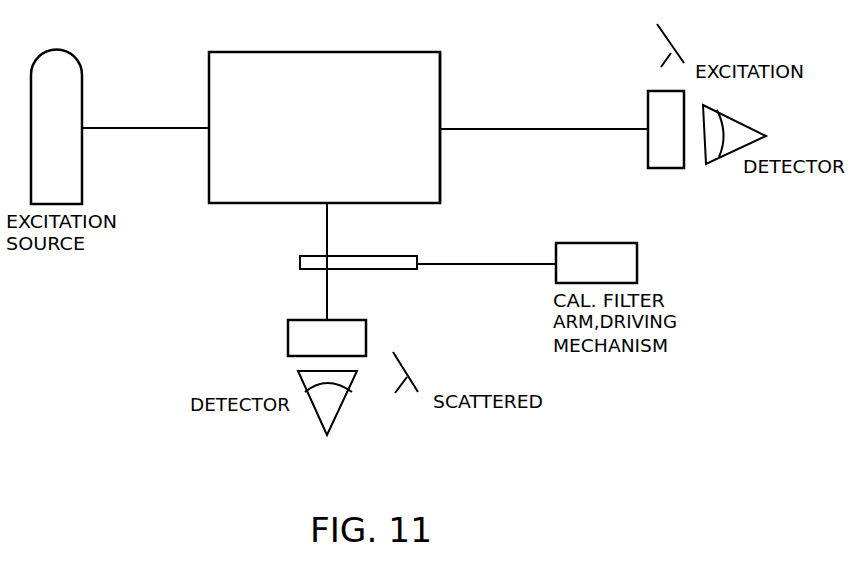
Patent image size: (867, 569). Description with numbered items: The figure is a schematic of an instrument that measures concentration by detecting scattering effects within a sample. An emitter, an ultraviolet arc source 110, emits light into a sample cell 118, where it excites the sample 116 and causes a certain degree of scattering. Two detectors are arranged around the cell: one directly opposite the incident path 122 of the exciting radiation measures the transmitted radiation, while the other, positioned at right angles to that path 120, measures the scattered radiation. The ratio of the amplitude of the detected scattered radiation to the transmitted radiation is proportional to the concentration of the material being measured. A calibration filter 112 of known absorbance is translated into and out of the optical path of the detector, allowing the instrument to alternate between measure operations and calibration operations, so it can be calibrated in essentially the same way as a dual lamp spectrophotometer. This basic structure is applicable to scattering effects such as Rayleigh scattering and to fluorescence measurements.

The ultraviolet arc source 110 is at (82, 88).
The calibration filter 112 is at (417, 255).
The sample 116 is at (395, 107).
The sample cell 118 is at (441, 62).
The detector at right angles to the incident path 120 is at (288, 322).
The detector directly opposite the incident path 122 is at (648, 103).